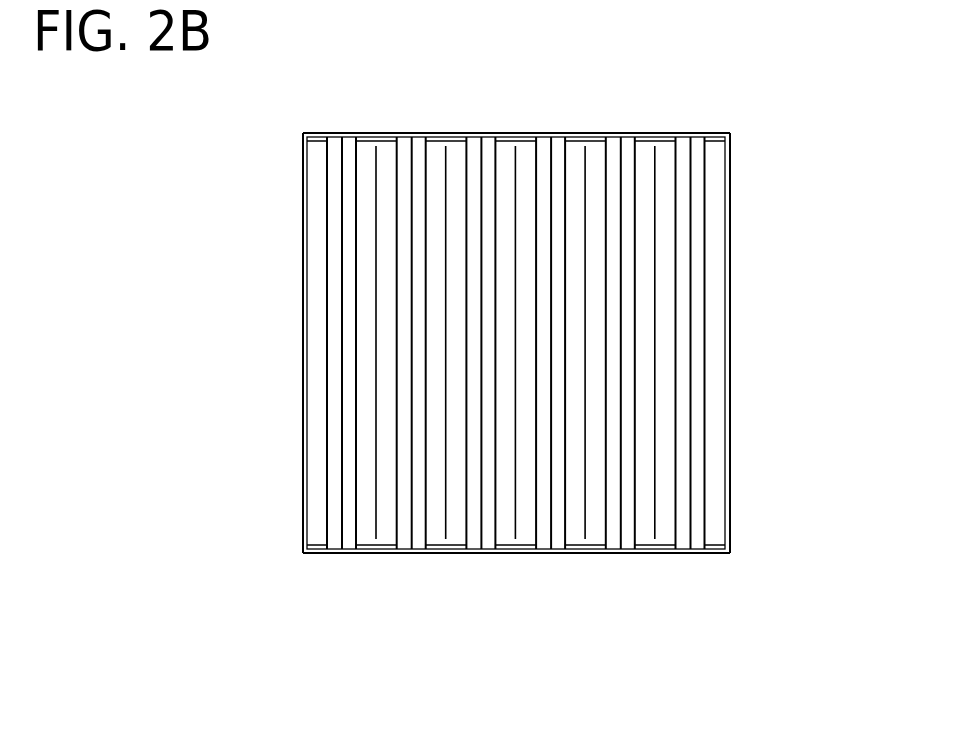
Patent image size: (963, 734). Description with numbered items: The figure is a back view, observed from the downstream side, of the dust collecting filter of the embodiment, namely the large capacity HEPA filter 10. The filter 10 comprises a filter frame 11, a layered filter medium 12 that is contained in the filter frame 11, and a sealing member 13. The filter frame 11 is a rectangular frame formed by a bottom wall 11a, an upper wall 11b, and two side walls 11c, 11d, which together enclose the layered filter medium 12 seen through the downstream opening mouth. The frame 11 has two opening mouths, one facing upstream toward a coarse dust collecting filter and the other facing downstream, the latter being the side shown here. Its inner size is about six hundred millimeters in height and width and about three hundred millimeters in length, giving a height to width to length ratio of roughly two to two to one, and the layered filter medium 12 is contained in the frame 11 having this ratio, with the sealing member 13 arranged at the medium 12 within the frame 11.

The large capacity HEPA filter 10 is at (294, 199).
The filter frame 11 is at (731, 196).
The bottom wall 11a is at (556, 553).
The upper wall 11b is at (345, 132).
The side wall 11c is at (303, 331).
The side wall 11d is at (731, 455).
The layered filter medium 12 is at (663, 347).
The sealing member 13 is at (368, 544).